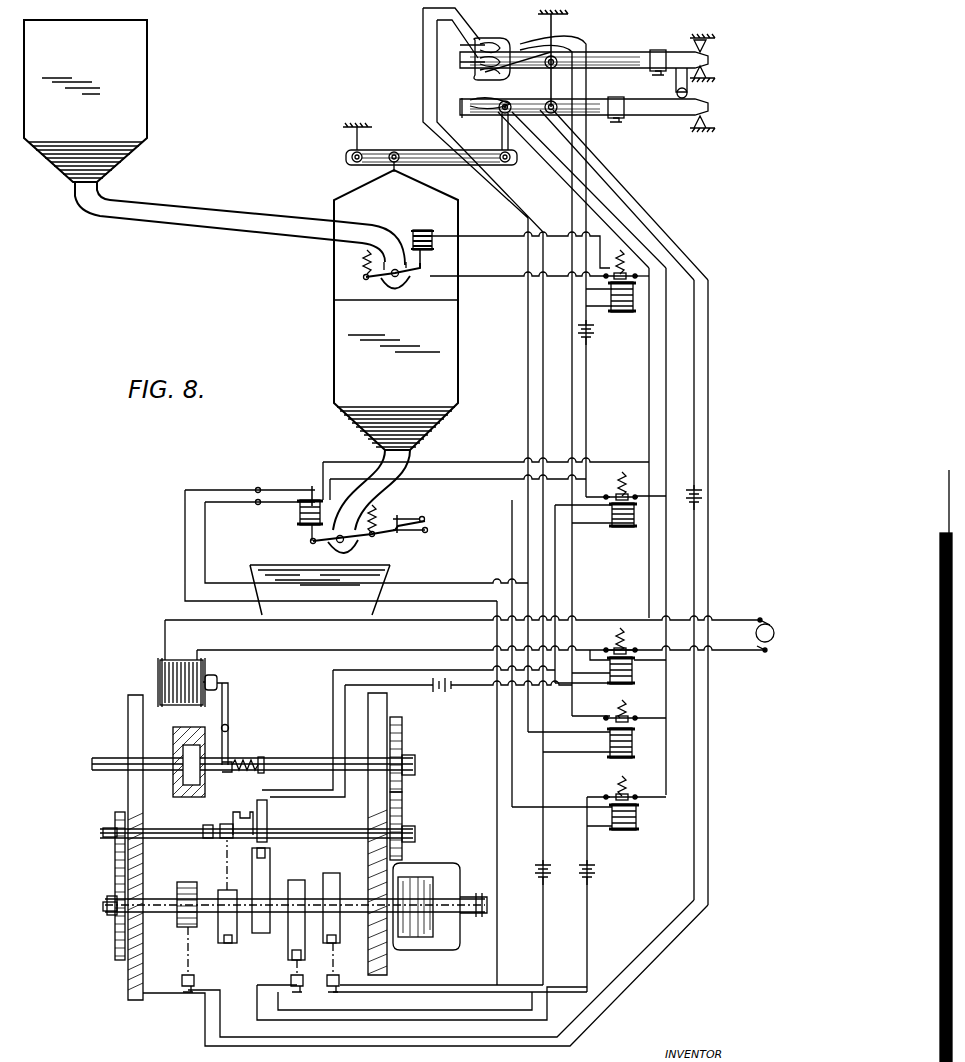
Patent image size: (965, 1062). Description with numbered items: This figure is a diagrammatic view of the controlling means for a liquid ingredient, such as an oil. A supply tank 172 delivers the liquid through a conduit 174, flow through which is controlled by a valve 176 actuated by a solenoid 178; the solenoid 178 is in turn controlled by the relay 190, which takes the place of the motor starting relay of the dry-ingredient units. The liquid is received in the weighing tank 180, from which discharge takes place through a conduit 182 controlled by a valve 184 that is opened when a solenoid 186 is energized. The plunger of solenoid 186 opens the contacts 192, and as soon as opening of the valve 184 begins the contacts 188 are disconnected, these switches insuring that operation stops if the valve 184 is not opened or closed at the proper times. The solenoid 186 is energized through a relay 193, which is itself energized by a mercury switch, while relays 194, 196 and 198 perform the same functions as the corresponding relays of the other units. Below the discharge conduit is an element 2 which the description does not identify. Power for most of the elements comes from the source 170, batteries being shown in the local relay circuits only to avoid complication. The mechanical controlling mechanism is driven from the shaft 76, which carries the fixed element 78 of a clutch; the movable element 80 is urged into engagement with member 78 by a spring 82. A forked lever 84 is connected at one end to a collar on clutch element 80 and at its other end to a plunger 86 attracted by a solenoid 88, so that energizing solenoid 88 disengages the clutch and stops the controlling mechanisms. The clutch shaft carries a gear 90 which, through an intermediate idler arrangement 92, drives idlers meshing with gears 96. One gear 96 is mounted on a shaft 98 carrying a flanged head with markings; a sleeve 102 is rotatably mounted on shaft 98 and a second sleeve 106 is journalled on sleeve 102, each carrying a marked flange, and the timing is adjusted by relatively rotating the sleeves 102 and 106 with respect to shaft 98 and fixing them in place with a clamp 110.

The scale pan 2 is at (252, 565).
The shaft 76 is at (108, 758).
The fixed clutch element 78 is at (181, 797).
The movable clutch element 80 is at (200, 792).
The spring 82 is at (262, 758).
The forked lever 84 is at (230, 740).
The plunger 86 is at (218, 681).
The solenoid 88 is at (183, 660).
The gear 90 is at (404, 748).
The intermediate idler arrangement 92 is at (404, 824).
The gear 96 is at (113, 886).
The shaft 98 is at (165, 913).
The sleeve 102 is at (210, 920).
The second sleeve 106 is at (278, 930).
The clamp 110 is at (450, 940).
The source of power 170 is at (770, 624).
The supply tank 172 is at (140, 80).
The conduit 174 is at (248, 212).
The valve 176 is at (405, 284).
The solenoid 178 is at (418, 230).
The weighing tank 180 is at (334, 320).
The conduit 182 is at (416, 150).
The valve 184 is at (360, 548).
The solenoid 186 is at (300, 515).
The contacts 188 is at (405, 518).
The relay 190 is at (626, 312).
The contacts 192 is at (290, 489).
The relay 193 is at (628, 528).
The relay 194 is at (624, 684).
The relay 196 is at (628, 748).
The relay 198 is at (636, 818).